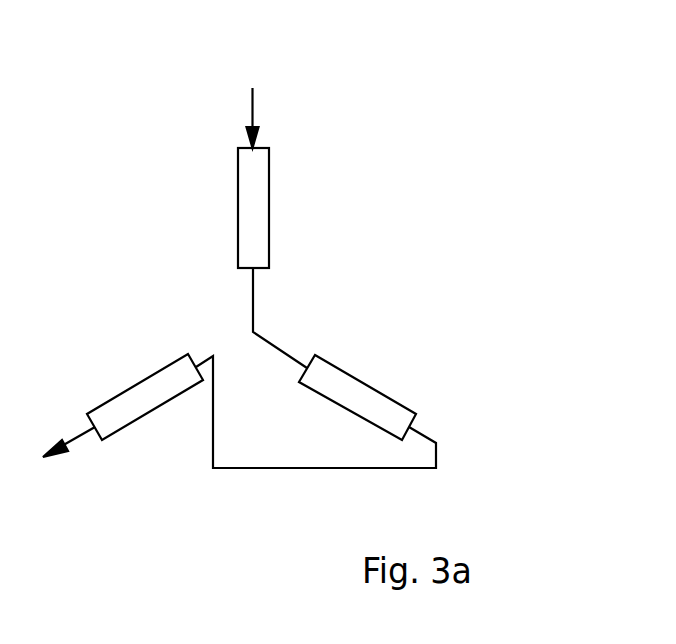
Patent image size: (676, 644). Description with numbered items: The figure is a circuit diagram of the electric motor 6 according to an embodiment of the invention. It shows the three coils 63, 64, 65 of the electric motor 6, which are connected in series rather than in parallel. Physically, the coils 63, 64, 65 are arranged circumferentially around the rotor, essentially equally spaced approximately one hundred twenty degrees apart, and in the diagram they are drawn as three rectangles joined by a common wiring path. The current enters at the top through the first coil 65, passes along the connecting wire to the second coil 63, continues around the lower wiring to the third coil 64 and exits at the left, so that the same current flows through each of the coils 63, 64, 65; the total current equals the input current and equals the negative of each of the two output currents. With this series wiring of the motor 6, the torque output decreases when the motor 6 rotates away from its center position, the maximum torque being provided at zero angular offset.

The electric motor 6 is at (412, 300).
The coil 63 is at (385, 393).
The coil 64 is at (157, 408).
The coil 65 is at (238, 193).